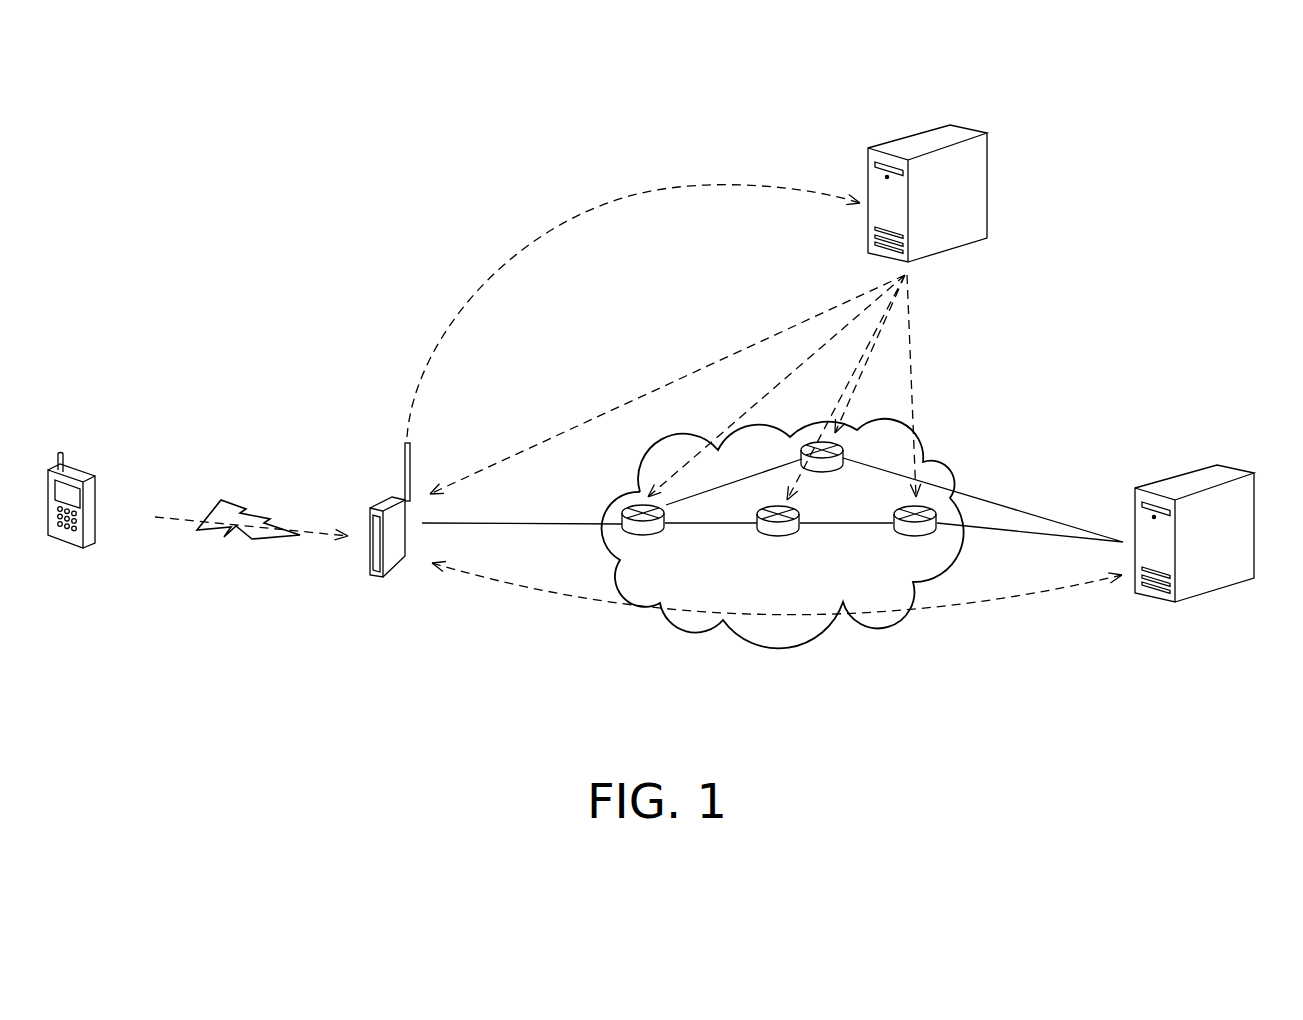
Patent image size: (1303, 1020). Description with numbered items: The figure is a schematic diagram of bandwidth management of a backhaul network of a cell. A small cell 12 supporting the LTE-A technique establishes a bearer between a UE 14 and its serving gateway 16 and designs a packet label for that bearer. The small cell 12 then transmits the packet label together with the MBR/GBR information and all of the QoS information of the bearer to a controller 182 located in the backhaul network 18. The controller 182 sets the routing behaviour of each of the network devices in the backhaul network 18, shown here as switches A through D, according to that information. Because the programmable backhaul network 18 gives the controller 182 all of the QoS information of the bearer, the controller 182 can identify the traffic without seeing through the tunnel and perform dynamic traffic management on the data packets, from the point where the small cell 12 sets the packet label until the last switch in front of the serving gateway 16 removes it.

The small cell 12 is at (390, 574).
The UE 14 is at (82, 470).
The serving gateway 16 is at (1225, 463).
The backhaul network 18 is at (817, 638).
The controller 182 is at (958, 123).